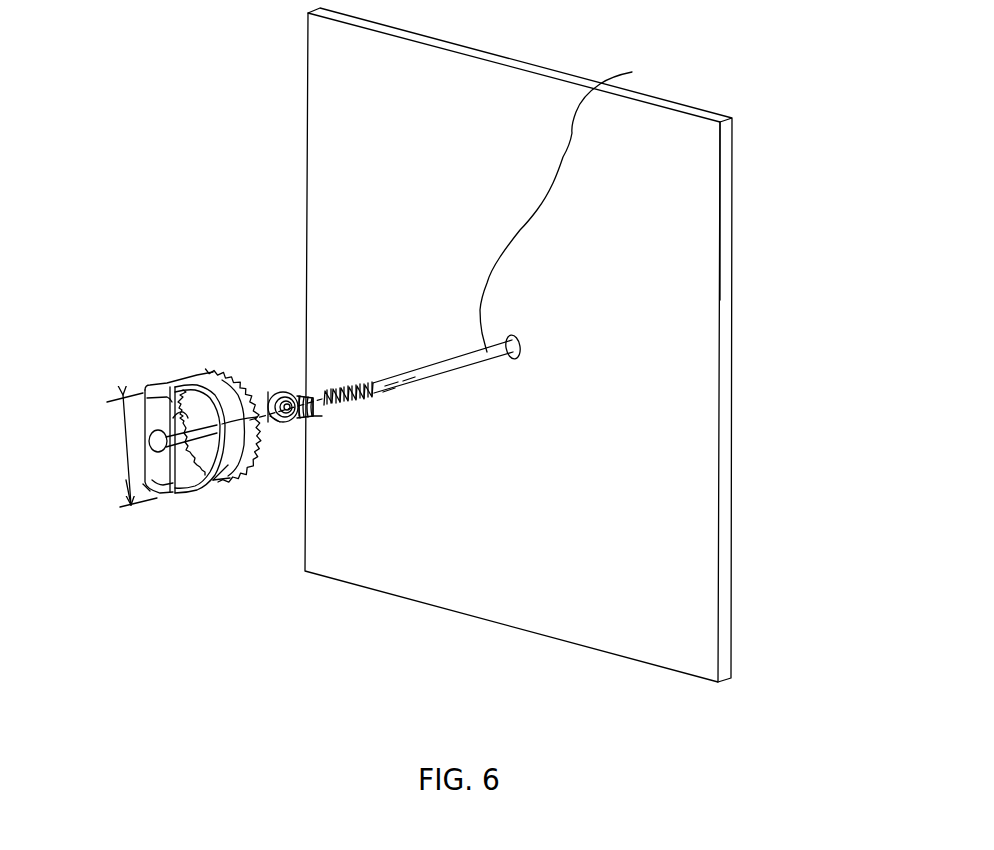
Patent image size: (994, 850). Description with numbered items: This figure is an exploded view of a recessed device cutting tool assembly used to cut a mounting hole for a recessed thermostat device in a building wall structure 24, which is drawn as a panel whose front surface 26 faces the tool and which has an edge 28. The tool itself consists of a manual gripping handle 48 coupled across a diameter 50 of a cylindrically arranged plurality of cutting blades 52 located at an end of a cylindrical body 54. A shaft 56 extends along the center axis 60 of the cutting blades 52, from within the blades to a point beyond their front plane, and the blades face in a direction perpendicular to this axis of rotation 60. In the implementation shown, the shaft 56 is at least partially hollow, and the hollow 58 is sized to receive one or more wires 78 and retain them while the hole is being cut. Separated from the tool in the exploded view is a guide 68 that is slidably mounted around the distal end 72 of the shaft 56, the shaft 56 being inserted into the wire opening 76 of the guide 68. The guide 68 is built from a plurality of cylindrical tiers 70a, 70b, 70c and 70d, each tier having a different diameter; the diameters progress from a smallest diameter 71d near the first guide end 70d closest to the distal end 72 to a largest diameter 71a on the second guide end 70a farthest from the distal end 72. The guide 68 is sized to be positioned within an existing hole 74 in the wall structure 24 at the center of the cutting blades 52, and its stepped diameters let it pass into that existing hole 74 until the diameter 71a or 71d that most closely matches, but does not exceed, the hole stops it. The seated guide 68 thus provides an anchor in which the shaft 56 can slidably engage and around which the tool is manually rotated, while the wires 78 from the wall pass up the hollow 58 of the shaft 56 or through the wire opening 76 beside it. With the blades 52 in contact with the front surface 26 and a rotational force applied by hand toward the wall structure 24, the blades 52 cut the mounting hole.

The building wall structure 24 is at (738, 148).
The front surface 26 is at (692, 167).
The panel edge 28 is at (733, 188).
The manual gripping handle 48 is at (145, 456).
The diameter 50 is at (133, 487).
The cutting blades 52 is at (255, 470).
The cylindrical body 54 is at (229, 462).
The shaft 56 is at (170, 423).
The hollow 58 is at (149, 440).
The center axis 60 is at (150, 478).
The guide 68 is at (300, 433).
The cylindrical tier 70a is at (267, 389).
The cylindrical tier 70b is at (305, 393).
The cylindrical tier 70c is at (309, 388).
The cylindrical tier 70d is at (316, 394).
The largest diameter 71a is at (271, 432).
The smallest diameter 71d is at (317, 412).
The distal end 72 is at (252, 412).
The existing hole 74 is at (522, 353).
The wire opening 76 is at (271, 400).
The wires 78 is at (575, 203).